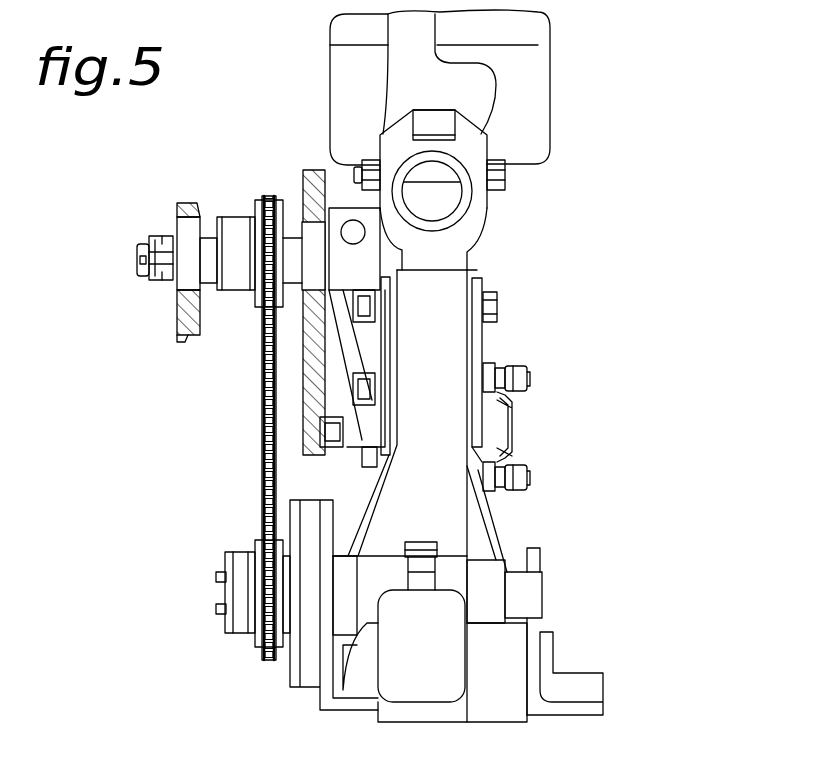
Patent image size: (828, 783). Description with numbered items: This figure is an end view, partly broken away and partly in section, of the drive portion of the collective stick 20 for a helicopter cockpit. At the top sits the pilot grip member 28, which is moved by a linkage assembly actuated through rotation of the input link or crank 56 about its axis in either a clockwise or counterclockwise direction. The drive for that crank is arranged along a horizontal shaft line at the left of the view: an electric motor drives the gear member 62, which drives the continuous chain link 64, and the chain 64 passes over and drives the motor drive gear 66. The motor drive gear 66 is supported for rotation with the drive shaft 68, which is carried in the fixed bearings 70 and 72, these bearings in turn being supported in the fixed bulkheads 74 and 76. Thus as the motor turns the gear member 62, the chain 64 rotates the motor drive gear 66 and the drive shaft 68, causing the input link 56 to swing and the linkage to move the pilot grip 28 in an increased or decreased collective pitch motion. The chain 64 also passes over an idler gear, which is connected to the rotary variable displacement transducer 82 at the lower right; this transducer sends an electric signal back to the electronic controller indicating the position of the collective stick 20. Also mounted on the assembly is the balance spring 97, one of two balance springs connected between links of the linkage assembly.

The collective stick 20 is at (616, 214).
The pilot grip member 28 is at (548, 80).
The input link or crank 56 is at (363, 257).
The gear member 62 is at (262, 545).
The continuous chain link 64 is at (262, 427).
The motor drive gear 66 is at (258, 197).
The drive shaft 68 is at (210, 240).
The fixed bearing 70 is at (312, 230).
The fixed bearing 72 is at (185, 219).
The fixed bulkhead 74 is at (178, 334).
The fixed bulkhead 76 is at (315, 172).
The rotary variable displacement transducer (RVDT) 82 is at (533, 586).
The balance spring 97 is at (507, 407).